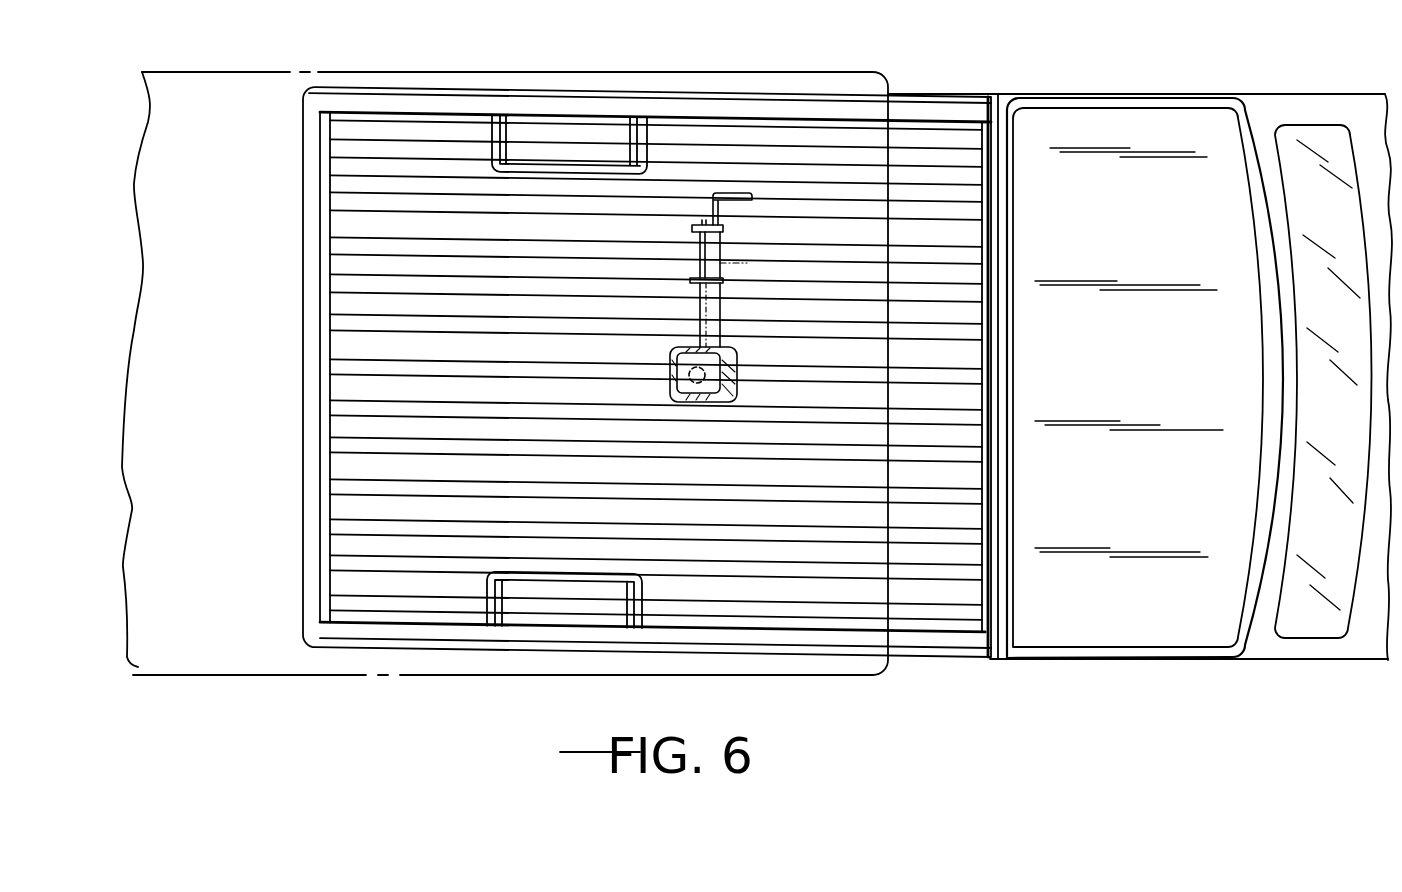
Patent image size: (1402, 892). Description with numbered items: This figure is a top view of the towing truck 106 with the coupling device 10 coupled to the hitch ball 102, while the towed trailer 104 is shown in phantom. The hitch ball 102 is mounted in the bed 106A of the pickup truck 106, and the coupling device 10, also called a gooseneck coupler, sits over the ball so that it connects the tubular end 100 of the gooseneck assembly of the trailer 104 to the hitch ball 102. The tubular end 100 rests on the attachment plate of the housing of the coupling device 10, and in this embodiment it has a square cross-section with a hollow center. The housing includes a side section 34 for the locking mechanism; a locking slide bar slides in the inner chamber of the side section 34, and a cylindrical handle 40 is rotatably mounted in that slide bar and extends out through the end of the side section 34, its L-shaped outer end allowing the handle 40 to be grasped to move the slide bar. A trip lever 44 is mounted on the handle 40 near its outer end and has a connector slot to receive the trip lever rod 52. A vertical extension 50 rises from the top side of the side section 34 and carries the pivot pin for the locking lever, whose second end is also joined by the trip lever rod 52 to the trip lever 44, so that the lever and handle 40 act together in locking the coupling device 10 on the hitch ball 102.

The coupling device 10 is at (722, 309).
The side section 34 is at (722, 312).
The handle 40 is at (720, 210).
The trip lever 44 is at (693, 232).
The vertical extension 50 is at (698, 297).
The trip lever rod 52 is at (698, 268).
The tubular end 100 is at (749, 398).
The hitch ball 102 is at (740, 392).
The trailer 104 is at (215, 647).
The towing truck 106 is at (1177, 620).
The bed 106A is at (930, 608).